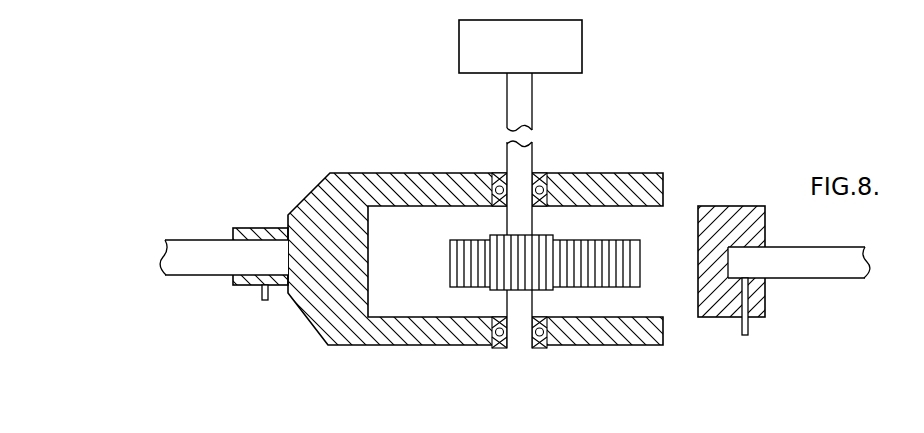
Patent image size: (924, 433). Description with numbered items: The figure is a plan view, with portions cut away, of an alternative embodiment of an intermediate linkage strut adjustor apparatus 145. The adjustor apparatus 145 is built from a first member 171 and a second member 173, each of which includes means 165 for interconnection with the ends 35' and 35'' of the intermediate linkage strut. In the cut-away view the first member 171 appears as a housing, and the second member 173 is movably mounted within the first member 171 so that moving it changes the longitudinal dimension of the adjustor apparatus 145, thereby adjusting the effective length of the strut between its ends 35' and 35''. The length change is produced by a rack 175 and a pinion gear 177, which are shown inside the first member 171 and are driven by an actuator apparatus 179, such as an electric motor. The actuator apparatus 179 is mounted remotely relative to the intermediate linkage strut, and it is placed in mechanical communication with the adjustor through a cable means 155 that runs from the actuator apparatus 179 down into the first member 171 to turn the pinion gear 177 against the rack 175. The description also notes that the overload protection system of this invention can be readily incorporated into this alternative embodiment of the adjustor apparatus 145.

The intermediate linkage strut adjustor apparatus 145 is at (388, 385).
The cable means 155 is at (534, 103).
The means for interconnection 165 is at (725, 300).
The first member 171 is at (313, 213).
The second member 173 is at (625, 303).
The rack 175 is at (640, 253).
The pinion gear 177 is at (507, 278).
The actuator apparatus 179 is at (582, 52).
The end of the intermediate linkage strut 35' is at (224, 275).
The end of the intermediate linkage strut 35'' is at (799, 283).